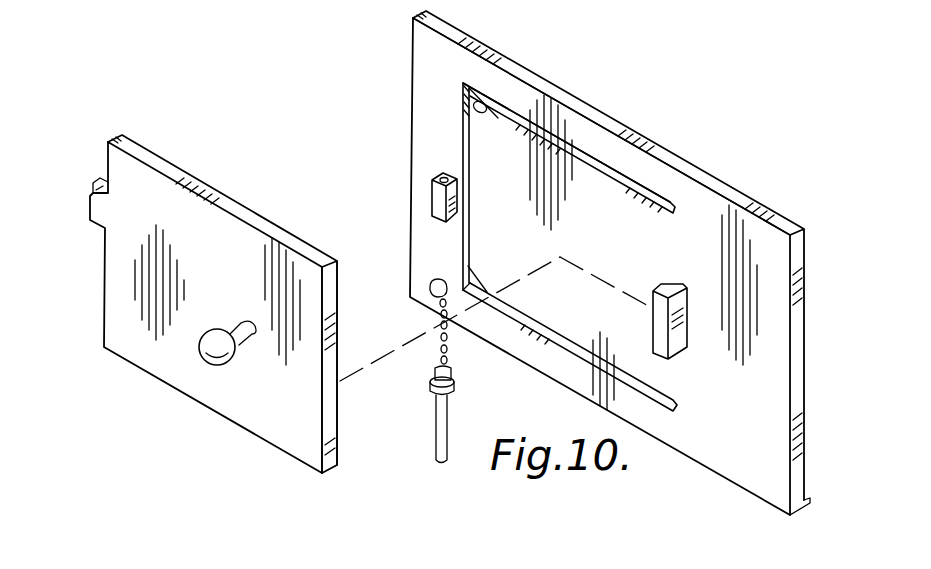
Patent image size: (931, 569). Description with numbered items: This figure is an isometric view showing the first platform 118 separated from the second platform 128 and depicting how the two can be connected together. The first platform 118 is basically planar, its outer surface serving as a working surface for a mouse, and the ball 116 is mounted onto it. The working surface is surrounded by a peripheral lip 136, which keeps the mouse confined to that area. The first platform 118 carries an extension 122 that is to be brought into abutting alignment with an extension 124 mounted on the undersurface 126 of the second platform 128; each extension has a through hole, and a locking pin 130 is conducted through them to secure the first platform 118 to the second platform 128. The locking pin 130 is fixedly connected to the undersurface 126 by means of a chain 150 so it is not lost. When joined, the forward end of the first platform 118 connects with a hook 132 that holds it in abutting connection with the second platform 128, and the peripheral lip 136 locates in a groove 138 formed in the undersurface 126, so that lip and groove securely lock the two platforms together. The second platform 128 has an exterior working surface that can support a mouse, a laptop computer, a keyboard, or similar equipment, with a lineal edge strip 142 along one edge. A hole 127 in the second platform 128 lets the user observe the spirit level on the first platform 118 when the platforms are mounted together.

The ball 116 is at (218, 367).
The first platform 118 is at (215, 215).
The extension 122 is at (100, 186).
The extension 124 is at (437, 192).
The undersurface 126 is at (425, 78).
The hole 127 is at (470, 106).
The second platform 128 is at (603, 113).
The locking pin 130 is at (433, 412).
The hook 132 is at (652, 325).
The peripheral lip 136 is at (320, 253).
The groove 138 is at (672, 160).
The lineal edge strip 142 is at (805, 505).
The chain 150 is at (443, 357).